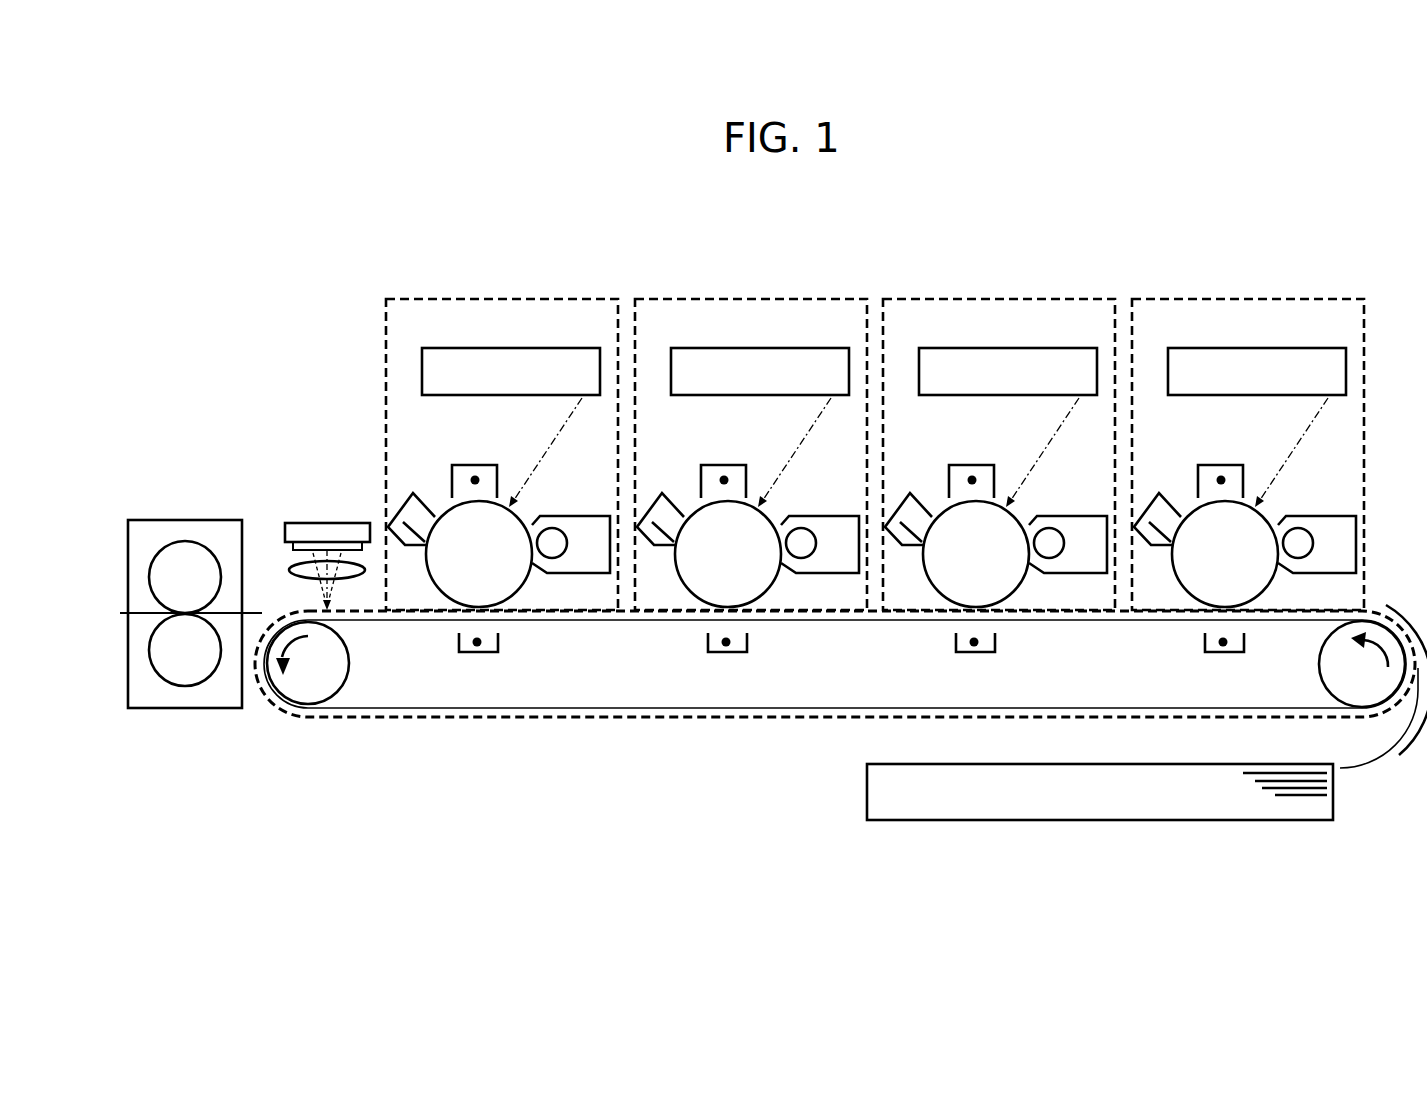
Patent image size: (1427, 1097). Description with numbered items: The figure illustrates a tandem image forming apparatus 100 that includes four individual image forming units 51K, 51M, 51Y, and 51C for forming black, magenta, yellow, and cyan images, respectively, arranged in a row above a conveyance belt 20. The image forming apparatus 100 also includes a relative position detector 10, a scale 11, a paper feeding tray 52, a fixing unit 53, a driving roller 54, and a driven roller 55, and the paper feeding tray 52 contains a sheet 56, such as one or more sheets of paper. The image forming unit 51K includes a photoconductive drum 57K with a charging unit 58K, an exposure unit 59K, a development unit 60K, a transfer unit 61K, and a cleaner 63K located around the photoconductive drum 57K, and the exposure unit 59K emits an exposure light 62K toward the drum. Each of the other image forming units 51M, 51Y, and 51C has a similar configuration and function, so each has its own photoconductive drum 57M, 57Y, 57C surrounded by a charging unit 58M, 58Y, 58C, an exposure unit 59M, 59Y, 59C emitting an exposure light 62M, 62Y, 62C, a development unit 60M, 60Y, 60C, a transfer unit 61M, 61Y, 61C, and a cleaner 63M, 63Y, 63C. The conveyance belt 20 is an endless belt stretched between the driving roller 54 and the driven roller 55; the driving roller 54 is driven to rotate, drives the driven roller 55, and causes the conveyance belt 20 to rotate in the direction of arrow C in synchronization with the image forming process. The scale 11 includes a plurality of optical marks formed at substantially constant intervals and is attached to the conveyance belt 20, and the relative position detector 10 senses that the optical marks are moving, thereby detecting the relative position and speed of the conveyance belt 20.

The image forming apparatus 100 is at (958, 255).
The image forming unit 51C is at (596, 298).
The image forming unit 51Y is at (756, 433).
The image forming unit 51M is at (1006, 433).
The image forming unit 51K is at (1254, 433).
The photoconductive drum 57C is at (528, 592).
The photoconductive drum 57Y is at (758, 554).
The photoconductive drum 57M is at (1009, 554).
The photoconductive drum 57K is at (1256, 554).
The charging unit 58C is at (475, 465).
The charging unit 58Y is at (724, 457).
The charging unit 58M is at (974, 457).
The charging unit 58K is at (1222, 457).
The exposure unit 59C is at (538, 348).
The exposure unit 59Y is at (761, 359).
The exposure unit 59M is at (1011, 359).
The exposure unit 59K is at (1259, 359).
The development unit 60C is at (580, 516).
The development unit 60Y is at (820, 521).
The development unit 60M is at (1068, 521).
The development unit 60K is at (1317, 521).
The transfer unit 61C is at (478, 653).
The transfer unit 61Y is at (752, 659).
The transfer unit 61M is at (1003, 659).
The transfer unit 61K is at (1250, 659).
The exposure light 62C is at (550, 444).
The exposure light 62Y is at (794, 452).
The exposure light 62M is at (1042, 452).
The exposure light 62K is at (1291, 452).
The cleaner 63C is at (413, 493).
The cleaner 63Y is at (661, 497).
The cleaner 63M is at (911, 497).
The cleaner 63K is at (1159, 497).
The conveyance belt 20 is at (620, 621).
The scale 11 is at (472, 718).
The relative position detector 10 is at (320, 516).
The fixing unit 53 is at (153, 520).
The driven roller 55 is at (352, 662).
The driving roller 54 is at (1337, 705).
The paper feeding tray 52 is at (889, 822).
The sheet 56 is at (1300, 798).